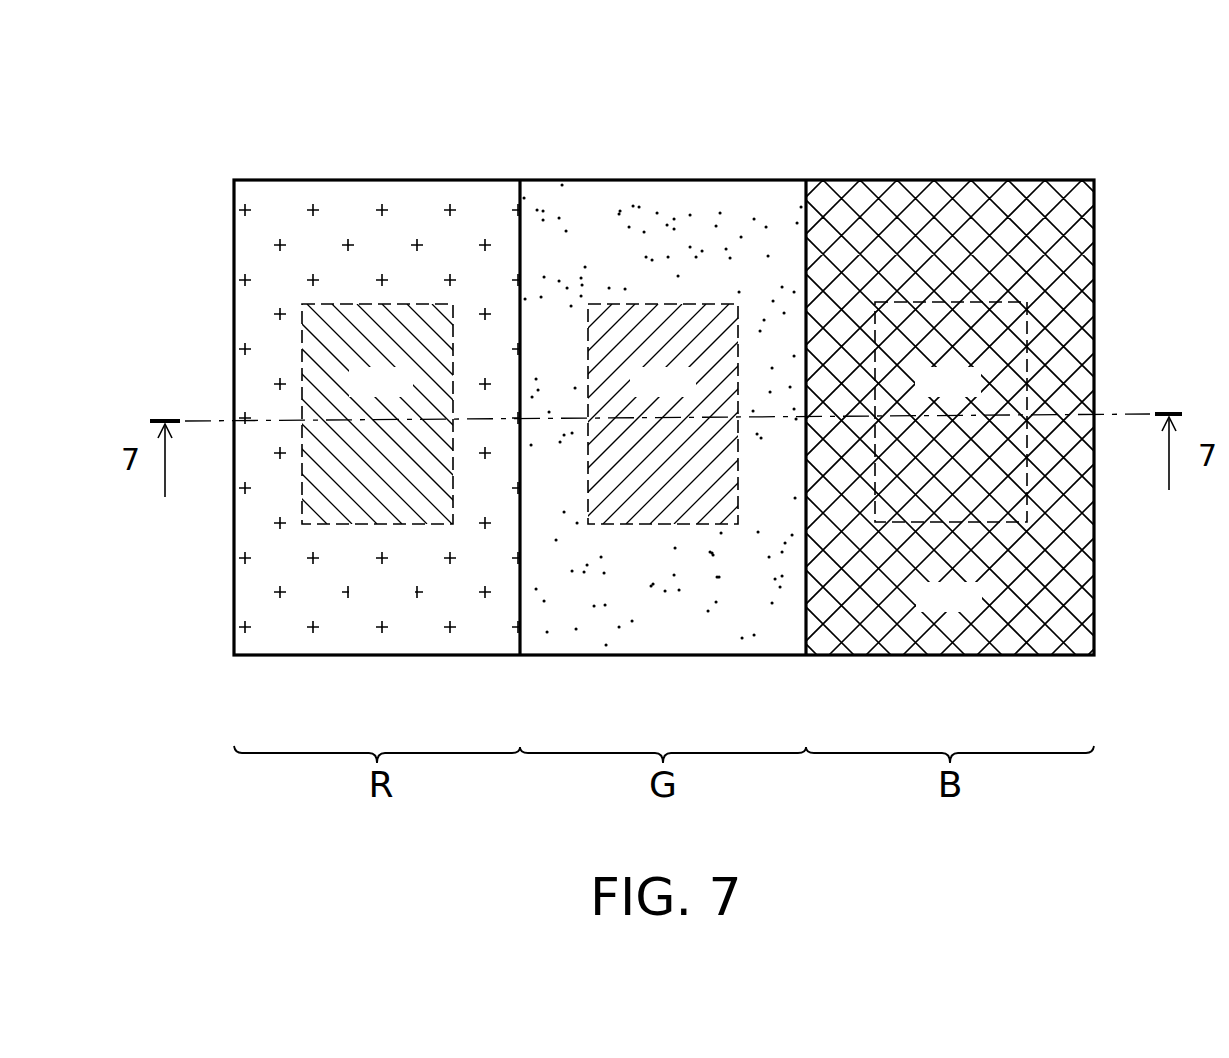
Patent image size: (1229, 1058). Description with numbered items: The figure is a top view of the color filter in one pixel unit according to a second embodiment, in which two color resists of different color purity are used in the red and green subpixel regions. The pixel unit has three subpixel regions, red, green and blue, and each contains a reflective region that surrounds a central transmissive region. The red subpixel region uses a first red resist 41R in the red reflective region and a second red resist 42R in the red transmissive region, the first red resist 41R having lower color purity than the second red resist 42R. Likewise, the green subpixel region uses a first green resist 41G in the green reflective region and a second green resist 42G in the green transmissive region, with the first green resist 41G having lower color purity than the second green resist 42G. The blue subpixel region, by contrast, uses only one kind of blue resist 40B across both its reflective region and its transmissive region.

The first red resist 41R is at (338, 215).
The second red resist 42R is at (428, 335).
The first green resist 41G is at (577, 213).
The second green resist 42G is at (703, 335).
The blue resist 40B is at (940, 207).